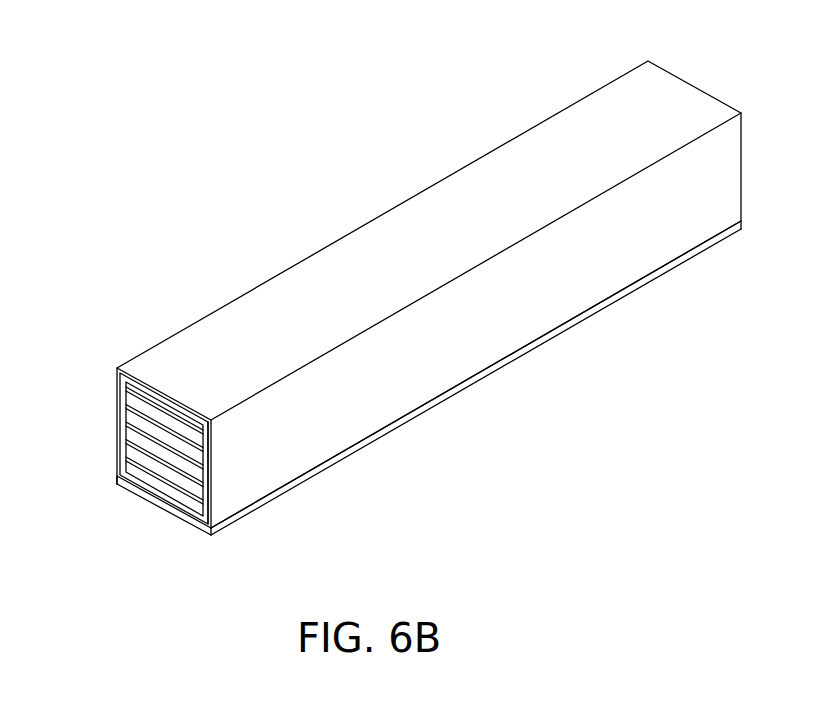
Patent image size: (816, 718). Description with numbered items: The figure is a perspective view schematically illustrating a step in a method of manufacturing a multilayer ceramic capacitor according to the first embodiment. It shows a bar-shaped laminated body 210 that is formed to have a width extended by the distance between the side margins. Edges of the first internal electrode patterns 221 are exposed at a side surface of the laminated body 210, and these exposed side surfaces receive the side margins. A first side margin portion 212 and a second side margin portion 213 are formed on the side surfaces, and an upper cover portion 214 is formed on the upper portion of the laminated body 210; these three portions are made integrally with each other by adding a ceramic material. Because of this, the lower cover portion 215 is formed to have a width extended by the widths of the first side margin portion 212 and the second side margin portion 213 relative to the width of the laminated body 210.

The laminated body 210 is at (568, 123).
The first side margin portion 212 is at (120, 435).
The second side margin portion 213 is at (218, 513).
The upper cover portion 214 is at (130, 379).
The lower cover portion 215 is at (175, 503).
The first internal electrode patterns 221 is at (153, 477).